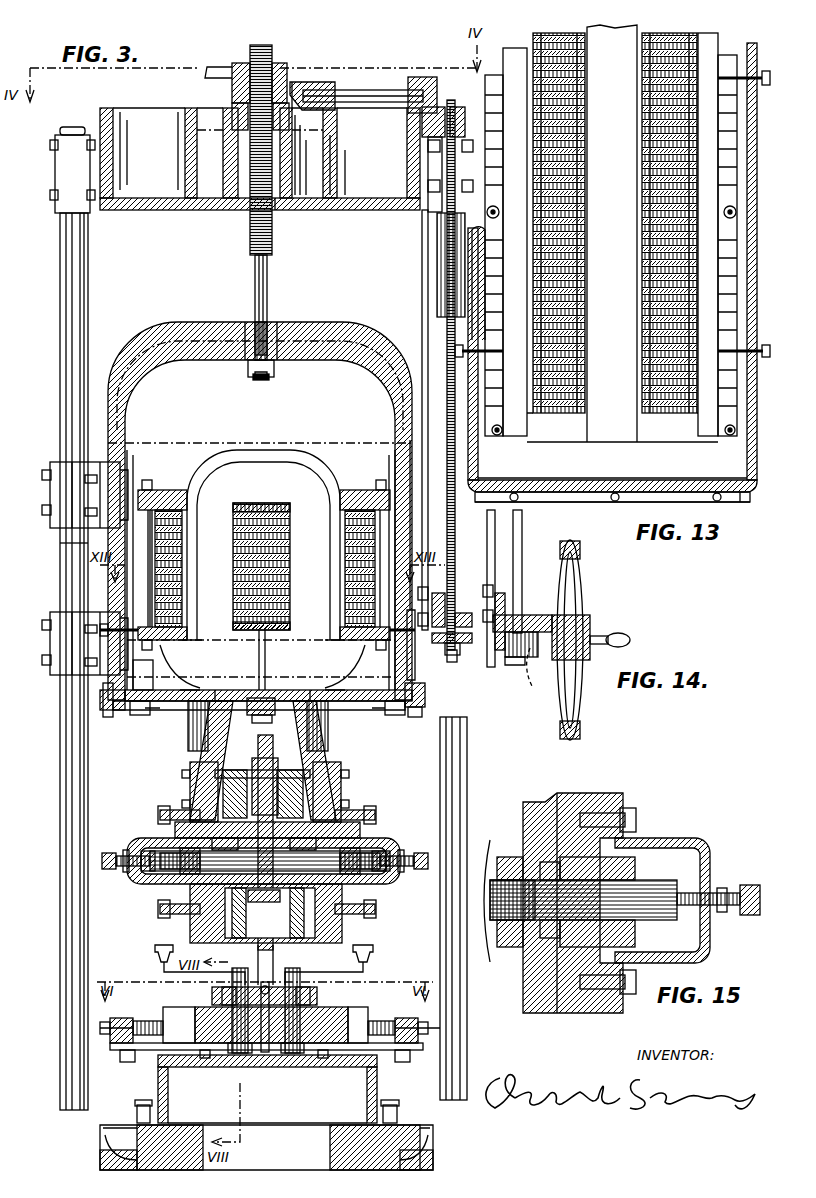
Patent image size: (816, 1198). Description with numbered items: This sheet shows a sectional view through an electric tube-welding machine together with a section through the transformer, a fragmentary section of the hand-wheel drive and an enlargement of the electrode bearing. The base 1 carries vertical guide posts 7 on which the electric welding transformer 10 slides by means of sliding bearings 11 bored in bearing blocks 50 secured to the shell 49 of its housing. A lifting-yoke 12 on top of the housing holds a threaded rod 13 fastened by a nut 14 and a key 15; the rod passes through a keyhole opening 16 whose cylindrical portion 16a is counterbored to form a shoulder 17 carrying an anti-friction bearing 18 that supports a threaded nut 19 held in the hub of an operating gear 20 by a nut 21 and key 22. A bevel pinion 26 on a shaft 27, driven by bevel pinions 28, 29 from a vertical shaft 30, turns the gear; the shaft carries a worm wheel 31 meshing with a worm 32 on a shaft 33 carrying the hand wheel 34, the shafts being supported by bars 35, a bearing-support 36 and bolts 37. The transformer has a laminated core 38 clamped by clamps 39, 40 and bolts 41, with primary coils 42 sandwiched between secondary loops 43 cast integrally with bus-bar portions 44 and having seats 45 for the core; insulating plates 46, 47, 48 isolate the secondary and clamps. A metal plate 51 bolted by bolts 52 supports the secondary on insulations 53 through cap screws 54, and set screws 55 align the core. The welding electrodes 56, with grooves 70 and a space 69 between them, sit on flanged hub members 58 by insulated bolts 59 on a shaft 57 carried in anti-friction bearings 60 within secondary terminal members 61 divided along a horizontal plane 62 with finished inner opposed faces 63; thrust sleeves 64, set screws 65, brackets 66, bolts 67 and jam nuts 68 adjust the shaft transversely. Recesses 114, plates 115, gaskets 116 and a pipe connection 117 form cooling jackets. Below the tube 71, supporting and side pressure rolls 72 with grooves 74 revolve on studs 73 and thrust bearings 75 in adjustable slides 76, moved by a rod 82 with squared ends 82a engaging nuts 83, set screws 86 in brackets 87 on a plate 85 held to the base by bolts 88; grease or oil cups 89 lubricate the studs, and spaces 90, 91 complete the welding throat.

In FIG. 3, the base 1 is at (100, 1158).
In FIG. 3, the guide posts 7 is at (60, 786).
In FIG. 3, the electric welding transformer 10 is at (261, 570).
In FIG. 13, the electric welding transformer 10 is at (612, 267).
In FIG. 3, the sliding bearings 11 is at (55, 470).
In FIG. 3, the lifting-yoke 12 is at (200, 325).
In FIG. 3, the threaded rod 13 is at (255, 272).
In FIG. 3, the nut 14 is at (272, 372).
In FIG. 3, the key 15 is at (285, 326).
In FIG. 3, the opening 16 is at (235, 205).
In FIG. 3, the cylindrical portion 16a is at (275, 205).
In FIG. 3, the shoulder 17 is at (292, 150).
In FIG. 3, the anti-friction bearing 18 is at (228, 135).
In FIG. 3, the threaded nut 19 is at (232, 95).
In FIG. 3, the operating gear 20 is at (215, 72).
In FIG. 3, the nut 21 is at (240, 63).
In FIG. 3, the key 22 is at (300, 82).
In FIG. 3, the bevel pinion 26 is at (318, 80).
In FIG. 3, the shaft 27 is at (365, 90).
In FIG. 3, the bevel pinion 28 is at (425, 80).
In FIG. 3, the bevel pinion 29 is at (450, 112).
In FIG. 3, the vertical shaft 30 is at (445, 318).
In FIG. 14, the vertical shaft 30 is at (522, 552).
In FIG. 3, the worm wheel 31 is at (462, 655).
In FIG. 14, the worm wheel 31 is at (533, 685).
In FIG. 14, the worm 32 is at (520, 658).
In FIG. 14, the shaft 33 is at (575, 660).
In FIG. 14, the hand wheel 34 is at (585, 590).
In FIG. 3, the bars 35 is at (423, 262).
In FIG. 14, the bars 35 is at (487, 545).
In FIG. 3, the bearing-support 36 is at (465, 613).
In FIG. 14, the bearing-support 36 is at (535, 615).
In FIG. 14, the bolts 37 is at (493, 660).
In FIG. 3, the laminated core 38 is at (170, 510).
In FIG. 13, the laminated core 38 is at (655, 425).
In FIG. 3, the clamp 39 is at (158, 490).
In FIG. 3, the clamp 40 is at (152, 690).
In FIG. 13, the clamp 40 is at (497, 436).
In FIG. 3, the bolts 41 is at (150, 540).
In FIG. 13, the bolts 41 is at (495, 205).
In FIG. 3, the primary coils 42 is at (290, 452).
In FIG. 13, the primary coils 42 is at (665, 335).
In FIG. 3, the secondary loops 43 is at (315, 462).
In FIG. 13, the secondary loops 43 is at (650, 292).
In FIG. 3, the bus-bar portions 44 is at (215, 690).
In FIG. 13, the bus-bar portions 44 is at (515, 95).
In FIG. 3, the seats 45 is at (215, 668).
In FIG. 3, the insulating plates 46 is at (188, 642).
In FIG. 3, the insulating plate 47 is at (187, 492).
In FIG. 3, the insulating plate 48 is at (155, 610).
In FIG. 3, the shell 49 is at (60, 543).
In FIG. 13, the shell 49 is at (578, 500).
In FIG. 3, the bearing blocks 50 is at (100, 492).
In FIG. 3, the metal plate 51 is at (118, 710).
In FIG. 13, the metal plate 51 is at (743, 500).
In FIG. 3, the bolts 52 is at (108, 700).
In FIG. 13, the bolts 52 is at (690, 500).
In FIG. 3, the insulations 53 is at (140, 705).
In FIG. 3, the cap screws 54 is at (150, 708).
In FIG. 3, the set screws 55 is at (105, 630).
In FIG. 13, the set screws 55 is at (740, 75).
In FIG. 3, the welding electrodes 56 is at (258, 749).
In FIG. 3, the shaft 57 is at (300, 855).
In FIG. 15, the shaft 57 is at (645, 880).
In FIG. 3, the flanged hub members 58 is at (218, 818).
In FIG. 15, the flanged hub members 58 is at (500, 858).
In FIG. 3, the insulated bolts 59 is at (225, 792).
In FIG. 3, the anti-friction bearings 60 is at (205, 860).
In FIG. 15, the anti-friction bearings 60 is at (557, 800).
In FIG. 3, the secondary terminal members 61 is at (190, 768).
In FIG. 15, the secondary terminal members 61 is at (568, 795).
In FIG. 3, the horizontal plane 62 is at (204, 847).
In FIG. 3, the inner opposed faces 63 is at (200, 760).
In FIG. 3, the thrust sleeves 64 is at (140, 882).
In FIG. 15, the thrust sleeves 64 is at (700, 955).
In FIG. 3, the set screws 65 is at (108, 870).
In FIG. 15, the set screws 65 is at (737, 890).
In FIG. 3, the brackets 66 is at (145, 840).
In FIG. 15, the brackets 66 is at (705, 840).
In FIG. 3, the bolts 67 is at (162, 812).
In FIG. 15, the bolts 67 is at (632, 812).
In FIG. 3, the jam nuts 68 is at (128, 855).
In FIG. 15, the jam nuts 68 is at (725, 910).
In FIG. 3, the space 69 is at (272, 738).
In FIG. 3, the grooves 70 is at (258, 732).
In FIG. 3, the tube 71 is at (232, 968).
In FIG. 3, the supporting and side pressure rolls 72 is at (212, 995).
In FIG. 3, the studs 73 is at (238, 1055).
In FIG. 3, the grooves 74 is at (225, 990).
In FIG. 3, the thrust bearings 75 is at (215, 1010).
In FIG. 3, the adjustable slides 76 is at (170, 1015).
In FIG. 3, the rod 82 is at (125, 1045).
In FIG. 3, the squared ends 82a is at (478, 1015).
In FIG. 3, the nuts 83 is at (165, 1010).
In FIG. 3, the plate 85 is at (158, 1100).
In FIG. 3, the set screws 86 is at (100, 1030).
In FIG. 3, the brackets 87 is at (125, 1058).
In FIG. 3, the bolts 88 is at (137, 1115).
In FIG. 3, the grease or oil cups 89 is at (155, 952).
In FIG. 3, the spaces 90 is at (252, 975).
In FIG. 3, the space 91 is at (264, 1050).
In FIG. 3, the recesses 114 is at (245, 690).
In FIG. 3, the plates 115 is at (188, 738).
In FIG. 3, the gaskets 116 is at (188, 770).
In FIG. 3, the pipe connection 117 is at (182, 690).